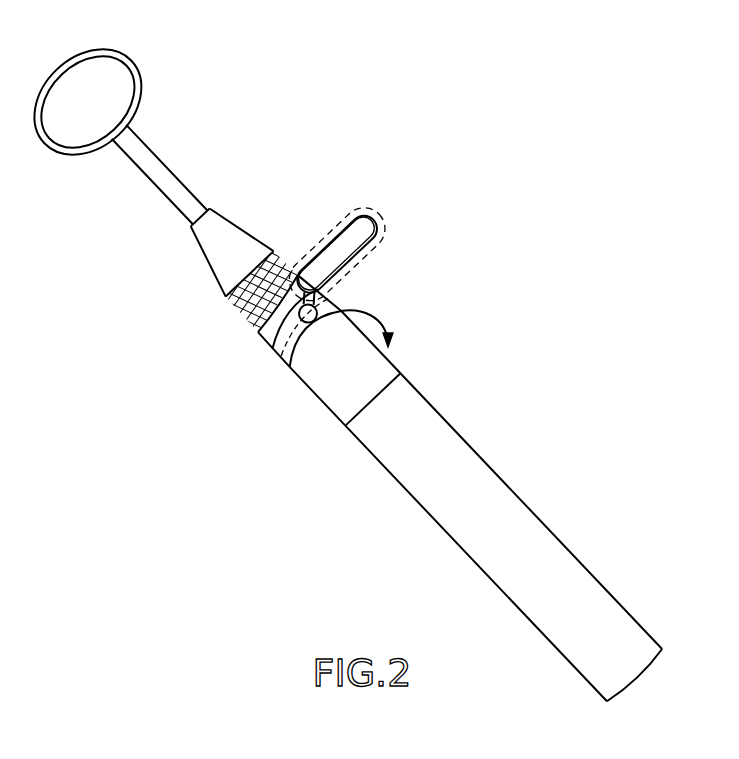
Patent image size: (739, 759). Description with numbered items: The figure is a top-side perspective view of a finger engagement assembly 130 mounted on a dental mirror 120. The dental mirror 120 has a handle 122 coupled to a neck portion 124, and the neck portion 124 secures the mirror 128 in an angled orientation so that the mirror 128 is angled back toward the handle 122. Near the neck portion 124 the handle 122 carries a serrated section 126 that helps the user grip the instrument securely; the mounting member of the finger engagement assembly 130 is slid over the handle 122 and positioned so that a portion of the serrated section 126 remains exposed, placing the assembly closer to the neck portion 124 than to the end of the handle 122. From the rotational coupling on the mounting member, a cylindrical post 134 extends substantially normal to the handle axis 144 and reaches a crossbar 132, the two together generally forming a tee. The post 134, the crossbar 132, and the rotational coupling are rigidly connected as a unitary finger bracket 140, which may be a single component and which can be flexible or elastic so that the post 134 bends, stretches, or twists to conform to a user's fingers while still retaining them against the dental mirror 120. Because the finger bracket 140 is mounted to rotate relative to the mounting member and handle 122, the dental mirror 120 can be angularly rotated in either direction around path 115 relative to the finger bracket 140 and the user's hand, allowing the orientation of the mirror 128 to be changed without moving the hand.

The path 115 is at (306, 369).
The dental mirror 120 is at (338, 366).
The handle 122 is at (471, 502).
The neck portion 124 is at (152, 153).
The serrated section 126 is at (250, 315).
The mirror 128 is at (110, 73).
The finger engagement assembly 130 is at (261, 220).
The crossbar 132 is at (371, 230).
The post 134 is at (332, 304).
The finger bracket 140 is at (357, 207).
The handle axis 144 is at (565, 570).